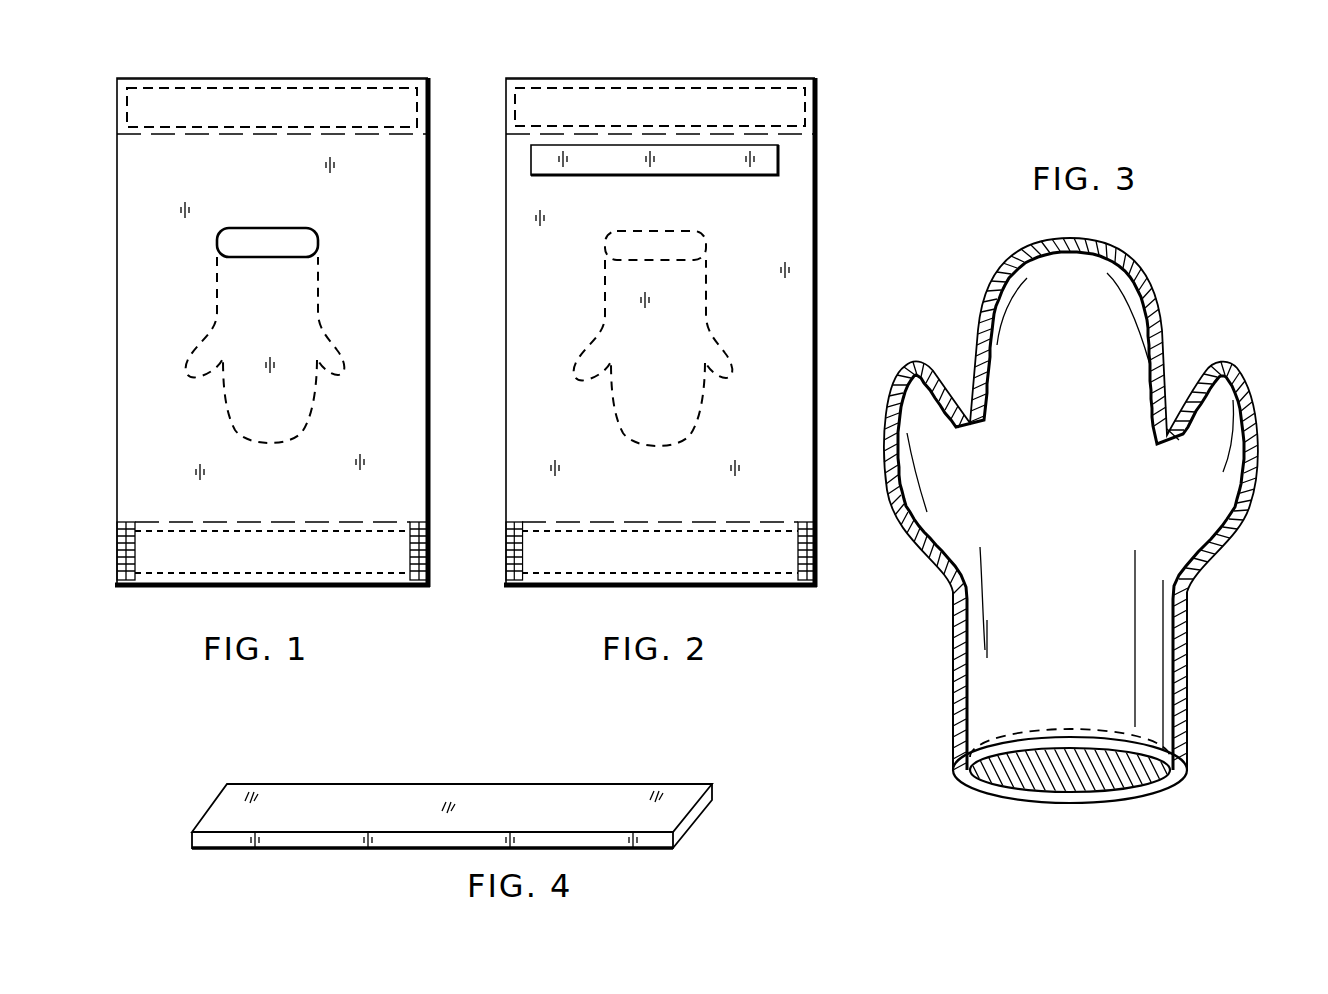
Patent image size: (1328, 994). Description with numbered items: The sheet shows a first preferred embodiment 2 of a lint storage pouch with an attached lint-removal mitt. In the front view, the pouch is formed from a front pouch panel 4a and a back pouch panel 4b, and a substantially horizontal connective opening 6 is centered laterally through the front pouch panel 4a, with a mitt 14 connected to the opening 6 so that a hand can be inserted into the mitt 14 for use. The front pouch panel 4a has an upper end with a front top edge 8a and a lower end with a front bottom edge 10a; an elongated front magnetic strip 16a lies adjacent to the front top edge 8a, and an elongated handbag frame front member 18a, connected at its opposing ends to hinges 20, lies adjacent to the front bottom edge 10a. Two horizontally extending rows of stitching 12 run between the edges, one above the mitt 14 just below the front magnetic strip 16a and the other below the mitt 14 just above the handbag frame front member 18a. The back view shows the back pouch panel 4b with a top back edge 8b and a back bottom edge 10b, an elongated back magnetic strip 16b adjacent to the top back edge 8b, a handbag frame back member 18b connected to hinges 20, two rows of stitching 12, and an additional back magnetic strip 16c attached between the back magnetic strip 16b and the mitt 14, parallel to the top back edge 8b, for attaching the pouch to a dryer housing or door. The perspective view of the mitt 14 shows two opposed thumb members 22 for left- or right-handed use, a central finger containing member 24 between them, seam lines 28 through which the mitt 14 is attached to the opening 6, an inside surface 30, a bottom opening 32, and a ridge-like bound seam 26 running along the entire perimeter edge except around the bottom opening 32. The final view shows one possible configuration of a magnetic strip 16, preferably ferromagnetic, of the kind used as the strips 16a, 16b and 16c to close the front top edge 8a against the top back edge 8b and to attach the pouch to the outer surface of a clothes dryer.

In FIG. 1, the first preferred embodiment 2 is at (431, 70).
In FIG. 2, the first preferred embodiment 2 is at (826, 70).
In FIG. 1, the front pouch panel 4a is at (422, 450).
In FIG. 2, the back pouch panel 4b is at (808, 358).
In FIG. 1, the connective opening 6 is at (316, 238).
In FIG. 1, the front top edge 8a is at (160, 70).
In FIG. 2, the top back edge 8b is at (607, 70).
In FIG. 1, the front bottom edge 10a is at (170, 592).
In FIG. 2, the back bottom edge 10b is at (547, 593).
In FIG. 1, the rows of stitching 12 is at (393, 134).
In FIG. 2, the rows of stitching 12 is at (806, 126).
In FIG. 1, the mitt 14 is at (321, 307).
In FIG. 2, the mitt 14 is at (708, 292).
In FIG. 3, the mitt 14 is at (1160, 256).
In FIG. 4, the magnetic strip 16 is at (358, 823).
In FIG. 1, the front magnetic strip 16a is at (155, 113).
In FIG. 2, the back magnetic strip 16b is at (809, 107).
In FIG. 2, the additional back magnetic strip 16c is at (769, 164).
In FIG. 1, the handbag frame front member 18a is at (358, 560).
In FIG. 2, the handbag frame back member 18b is at (757, 565).
In FIG. 1, the hinges 20 is at (135, 557).
In FIG. 2, the hinges 20 is at (523, 553).
In FIG. 3, the thumb members 22 is at (1236, 470).
In FIG. 3, the central finger containing member 24 is at (1040, 280).
In FIG. 3, the ridge-like bound seam 26 is at (1190, 612).
In FIG. 3, the seam lines 28 is at (1098, 720).
In FIG. 3, the inside surface 30 is at (1090, 778).
In FIG. 3, the bottom opening 32 is at (1150, 783).